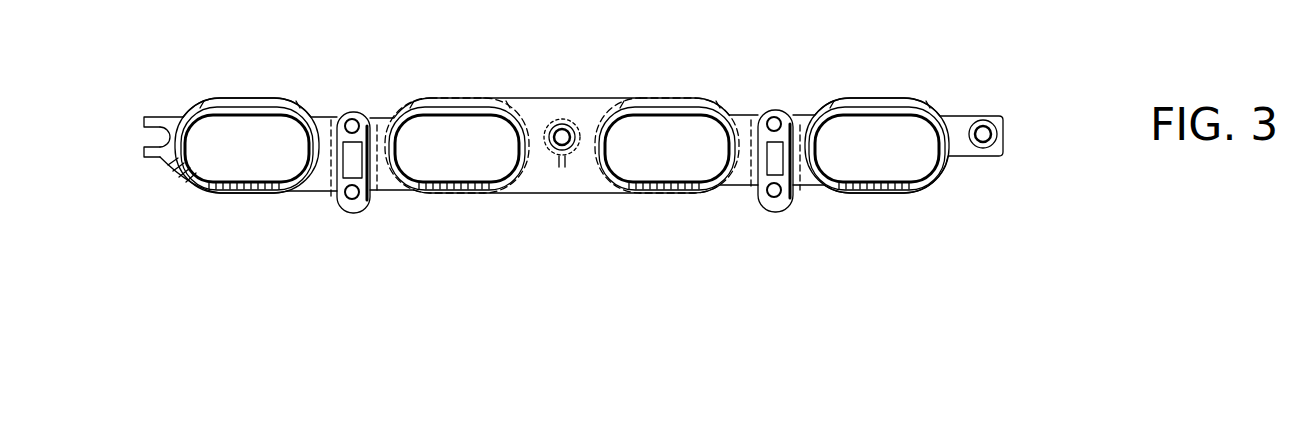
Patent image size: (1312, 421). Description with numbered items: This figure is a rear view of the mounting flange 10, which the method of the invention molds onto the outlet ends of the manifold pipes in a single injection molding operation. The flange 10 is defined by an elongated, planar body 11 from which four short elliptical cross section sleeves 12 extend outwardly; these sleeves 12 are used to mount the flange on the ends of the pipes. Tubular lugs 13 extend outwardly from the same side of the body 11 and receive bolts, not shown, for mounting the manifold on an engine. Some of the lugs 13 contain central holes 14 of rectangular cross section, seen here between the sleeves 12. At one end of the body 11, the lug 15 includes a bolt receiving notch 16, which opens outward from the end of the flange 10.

The mounting flange 10 is at (548, 97).
The body 11 is at (543, 168).
The sleeves 12 is at (436, 113).
The tubular lugs 13 is at (370, 113).
The holes 14 is at (338, 199).
The lug 15 is at (162, 116).
The bolt receiving notch 16 is at (141, 136).